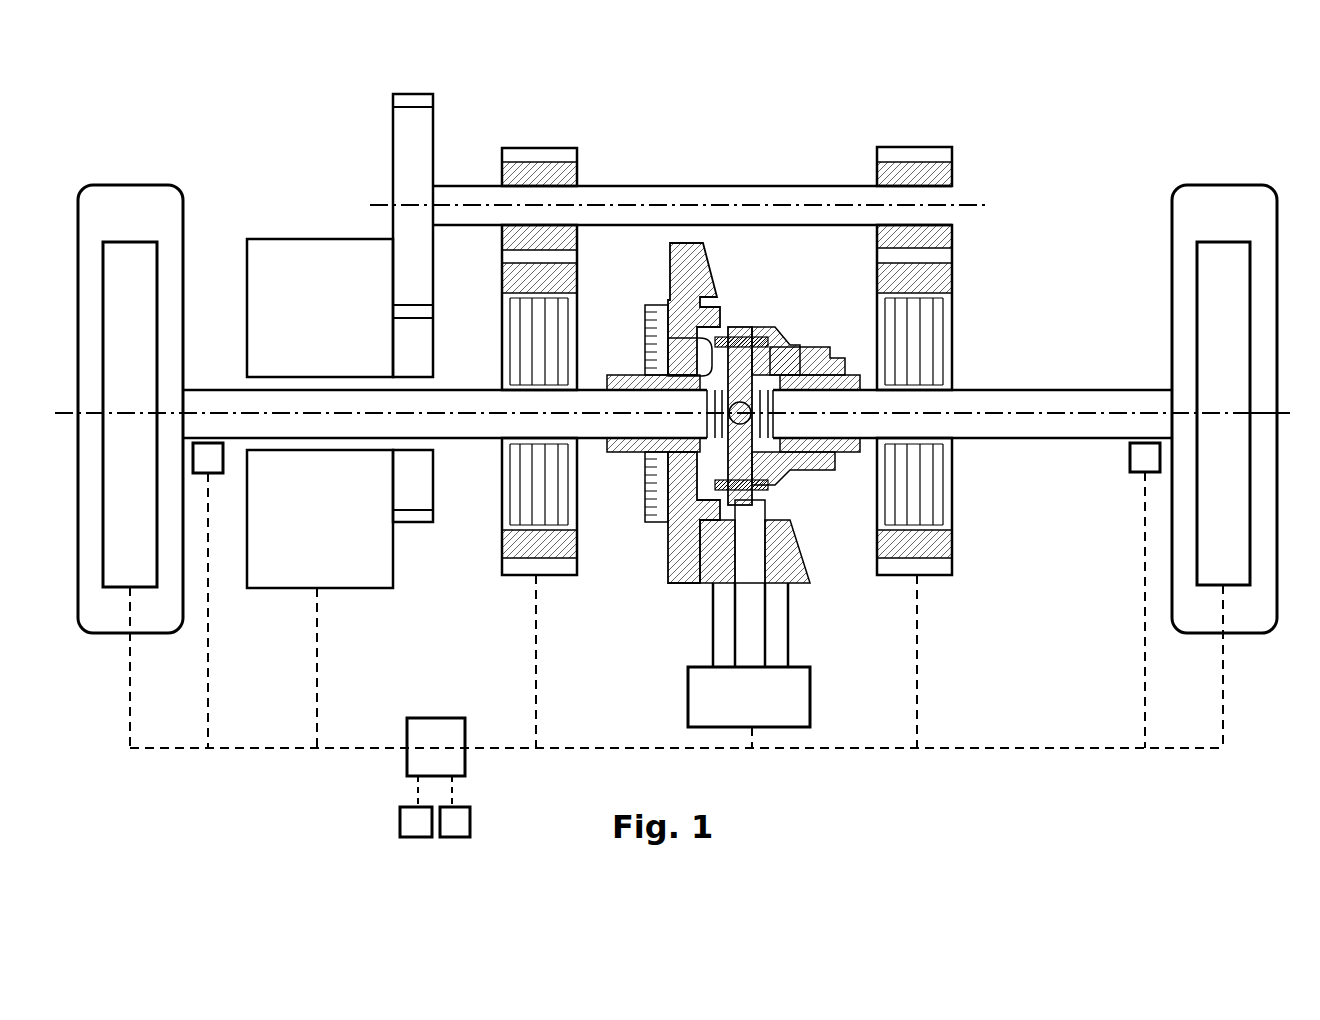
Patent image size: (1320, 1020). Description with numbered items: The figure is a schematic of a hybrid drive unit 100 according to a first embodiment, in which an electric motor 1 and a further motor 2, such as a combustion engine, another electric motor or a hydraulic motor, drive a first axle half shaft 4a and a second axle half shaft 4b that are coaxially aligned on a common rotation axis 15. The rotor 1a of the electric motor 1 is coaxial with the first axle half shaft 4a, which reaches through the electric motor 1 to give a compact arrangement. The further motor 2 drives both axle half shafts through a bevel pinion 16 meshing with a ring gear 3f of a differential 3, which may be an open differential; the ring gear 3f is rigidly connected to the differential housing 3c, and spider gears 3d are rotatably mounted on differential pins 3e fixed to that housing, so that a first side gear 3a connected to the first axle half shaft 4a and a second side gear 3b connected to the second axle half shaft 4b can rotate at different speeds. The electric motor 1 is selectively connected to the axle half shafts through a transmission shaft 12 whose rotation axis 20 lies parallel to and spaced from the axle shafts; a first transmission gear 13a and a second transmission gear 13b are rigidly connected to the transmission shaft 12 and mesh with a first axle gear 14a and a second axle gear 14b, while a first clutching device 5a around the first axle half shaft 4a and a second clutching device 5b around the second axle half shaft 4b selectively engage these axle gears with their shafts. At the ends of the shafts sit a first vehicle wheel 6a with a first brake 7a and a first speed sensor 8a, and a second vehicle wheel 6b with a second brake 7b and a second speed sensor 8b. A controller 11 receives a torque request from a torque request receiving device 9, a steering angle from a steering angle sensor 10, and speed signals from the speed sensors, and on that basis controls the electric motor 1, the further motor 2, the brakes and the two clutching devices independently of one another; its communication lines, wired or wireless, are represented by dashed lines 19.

The hybrid drive unit 100 is at (992, 798).
The electric motor 1 is at (290, 237).
The rotor 1a is at (433, 352).
The further motor 2 is at (812, 705).
The differential 3 is at (722, 418).
The first side gear 3a is at (660, 355).
The second side gear 3b is at (792, 450).
The differential housing 3c is at (785, 345).
The spider gears 3d is at (770, 347).
The differential pins 3e is at (742, 330).
The ring gear 3f is at (668, 247).
The first axle half shaft 4a is at (222, 387).
The second axle half shaft 4b is at (1020, 388).
The first clutching device 5a is at (493, 362).
The second clutching device 5b is at (947, 360).
The first vehicle wheel 6a is at (92, 183).
The second vehicle wheel 6b is at (1253, 185).
The first brake 7a is at (142, 240).
The second brake 7b is at (1210, 240).
The first speed sensor 8a is at (218, 475).
The second speed sensor 8b is at (1128, 460).
The torque request receiving device 9 is at (398, 820).
The steering angle sensor 10 is at (470, 820).
The controller 11 is at (405, 728).
The transmission shaft 12 is at (718, 185).
The first transmission gear 13a is at (541, 147).
The second transmission gear 13b is at (913, 147).
The first axle gear 14a is at (502, 577).
The second axle gear 14b is at (880, 577).
The common rotation axis 15 is at (1288, 418).
The bevel pinion 16 is at (710, 625).
The dashed lines 19 is at (248, 750).
The rotation axis 20 is at (958, 205).